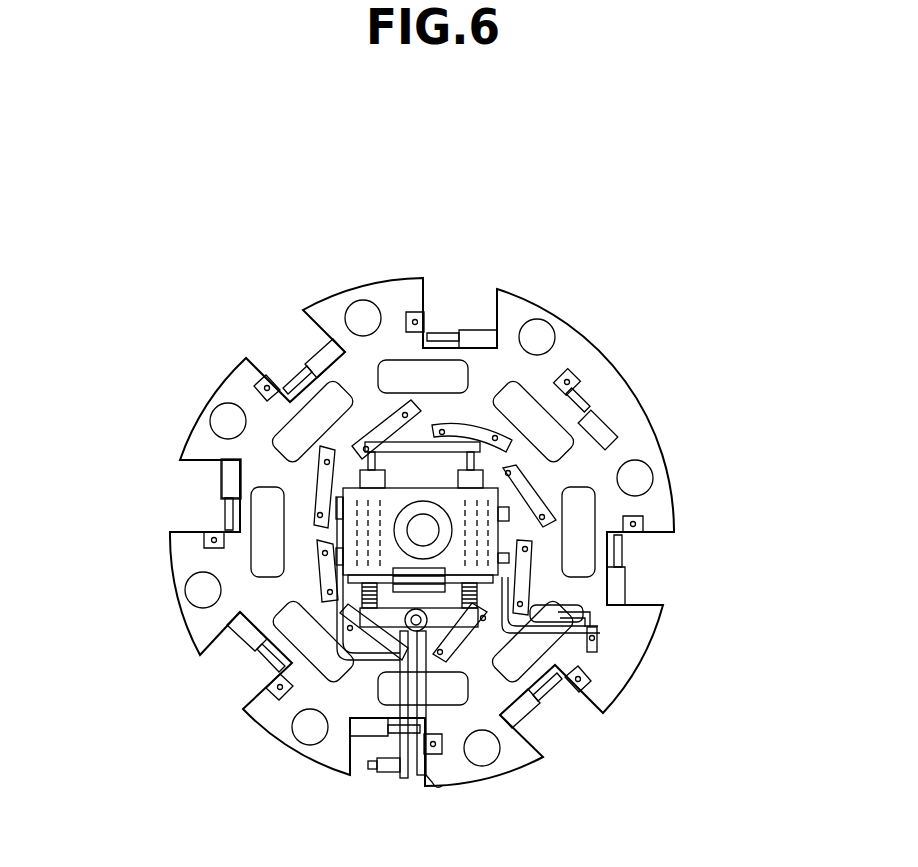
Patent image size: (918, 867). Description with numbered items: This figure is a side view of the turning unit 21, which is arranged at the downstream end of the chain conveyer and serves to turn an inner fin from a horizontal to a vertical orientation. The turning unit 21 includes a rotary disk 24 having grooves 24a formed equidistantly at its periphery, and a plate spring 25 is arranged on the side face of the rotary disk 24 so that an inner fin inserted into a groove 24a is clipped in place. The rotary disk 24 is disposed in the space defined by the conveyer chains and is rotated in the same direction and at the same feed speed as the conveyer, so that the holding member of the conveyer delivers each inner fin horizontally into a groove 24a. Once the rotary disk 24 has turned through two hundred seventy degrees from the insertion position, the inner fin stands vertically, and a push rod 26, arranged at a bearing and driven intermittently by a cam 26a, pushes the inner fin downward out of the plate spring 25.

The turning unit 21 is at (551, 300).
The rotary disk 24 is at (577, 352).
The groove 24a is at (307, 323).
The plate spring 25 is at (257, 356).
The push rod 26 is at (427, 725).
The cam 26a is at (520, 572).